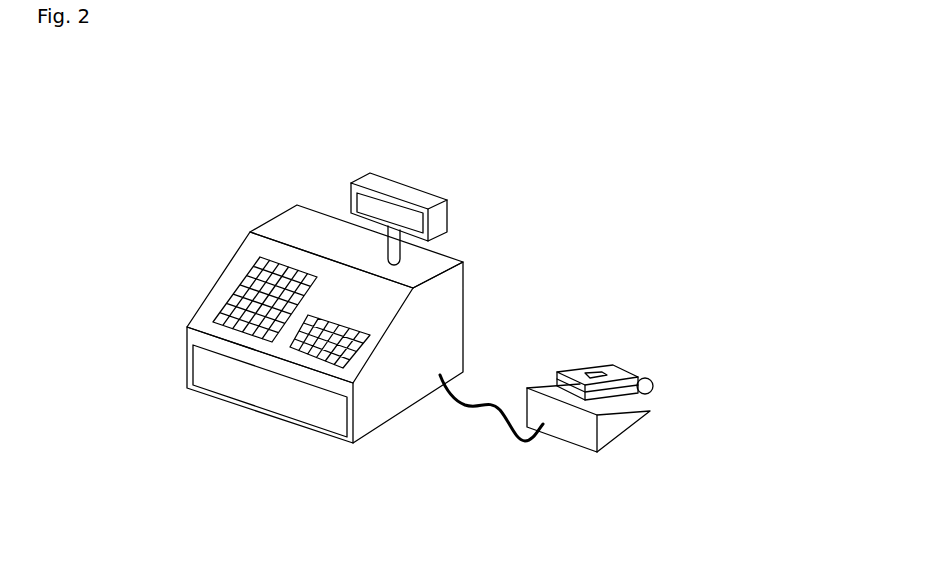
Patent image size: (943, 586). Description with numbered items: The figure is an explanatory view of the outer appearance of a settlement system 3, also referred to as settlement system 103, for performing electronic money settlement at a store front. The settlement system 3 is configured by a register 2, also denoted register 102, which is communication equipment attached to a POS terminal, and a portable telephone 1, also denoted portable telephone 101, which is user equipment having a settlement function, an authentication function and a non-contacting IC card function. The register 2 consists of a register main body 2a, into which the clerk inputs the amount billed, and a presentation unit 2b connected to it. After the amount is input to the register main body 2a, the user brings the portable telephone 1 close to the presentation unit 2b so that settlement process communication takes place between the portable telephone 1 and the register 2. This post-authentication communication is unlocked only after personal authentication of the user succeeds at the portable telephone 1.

The settlement system 3 is at (508, 333).
The settlement system 103 is at (577, 156).
The register 2 is at (436, 369).
The register 102 is at (282, 510).
The register main body 2a is at (302, 413).
The presentation unit 2b is at (568, 435).
The portable telephone 1 is at (693, 355).
The portable telephone 101 is at (627, 372).